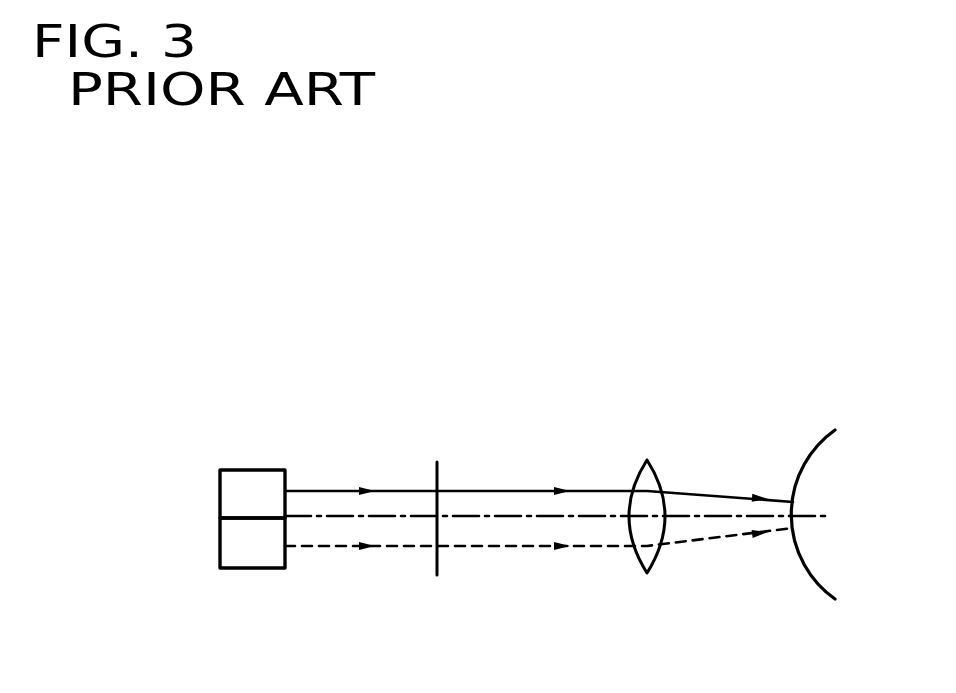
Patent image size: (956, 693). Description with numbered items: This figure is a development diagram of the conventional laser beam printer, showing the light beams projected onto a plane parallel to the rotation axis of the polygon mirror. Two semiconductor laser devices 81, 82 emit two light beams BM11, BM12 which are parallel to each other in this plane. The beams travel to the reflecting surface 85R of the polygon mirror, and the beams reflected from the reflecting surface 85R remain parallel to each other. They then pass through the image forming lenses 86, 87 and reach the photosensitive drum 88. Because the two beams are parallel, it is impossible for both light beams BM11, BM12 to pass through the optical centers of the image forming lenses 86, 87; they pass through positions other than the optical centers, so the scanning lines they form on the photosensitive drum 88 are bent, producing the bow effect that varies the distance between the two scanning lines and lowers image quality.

The semiconductor laser device 81 is at (220, 497).
The semiconductor laser device 82 is at (220, 545).
The light beam BM11 is at (332, 490).
The light beam BM12 is at (333, 555).
The reflecting surface 85R is at (437, 470).
The image forming lens 86 is at (697, 483).
The image forming lens 87 is at (655, 478).
The photosensitive drum 88 is at (822, 442).